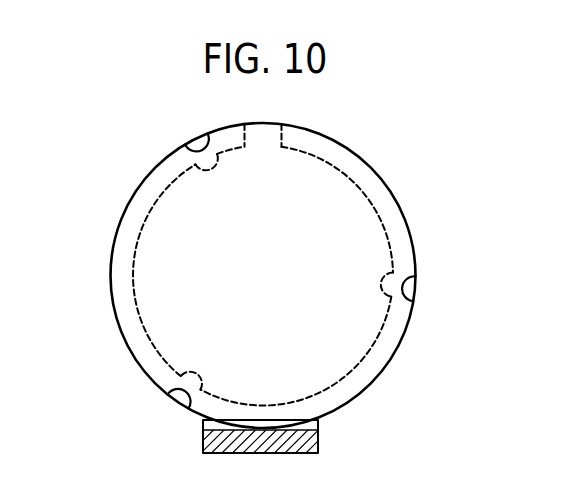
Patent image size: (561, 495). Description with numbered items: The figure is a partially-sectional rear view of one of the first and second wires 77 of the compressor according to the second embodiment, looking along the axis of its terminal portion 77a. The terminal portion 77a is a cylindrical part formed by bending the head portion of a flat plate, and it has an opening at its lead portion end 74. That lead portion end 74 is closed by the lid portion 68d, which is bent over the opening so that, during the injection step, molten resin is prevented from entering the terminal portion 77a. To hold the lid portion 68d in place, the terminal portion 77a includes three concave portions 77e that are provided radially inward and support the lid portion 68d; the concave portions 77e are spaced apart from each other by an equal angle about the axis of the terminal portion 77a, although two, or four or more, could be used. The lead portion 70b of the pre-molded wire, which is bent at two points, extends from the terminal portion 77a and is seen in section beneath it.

The wire 77 is at (126, 165).
The terminal portion 77a is at (366, 179).
The lead portion end 74 is at (376, 258).
The concave portion 77e is at (408, 290).
The lid portion 68d is at (183, 295).
The lead portion 70b is at (318, 442).